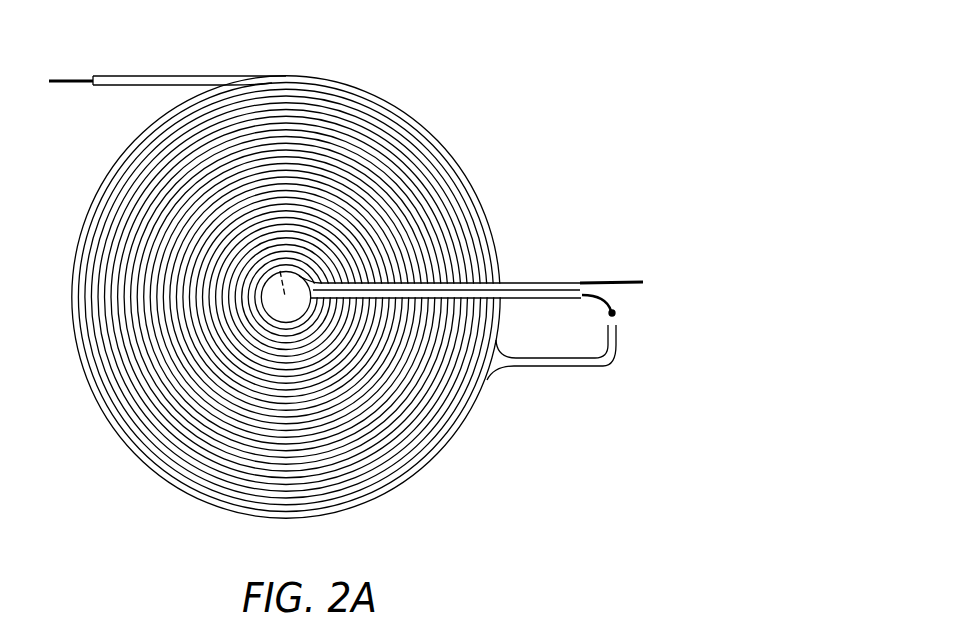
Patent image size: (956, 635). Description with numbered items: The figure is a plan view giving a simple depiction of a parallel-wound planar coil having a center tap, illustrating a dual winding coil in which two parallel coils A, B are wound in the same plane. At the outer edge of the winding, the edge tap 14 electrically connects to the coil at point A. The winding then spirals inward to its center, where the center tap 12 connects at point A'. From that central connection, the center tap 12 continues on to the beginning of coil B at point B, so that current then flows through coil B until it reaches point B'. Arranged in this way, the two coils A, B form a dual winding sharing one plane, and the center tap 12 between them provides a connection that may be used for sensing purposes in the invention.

The edge tap 14 is at (110, 76).
The coil A is at (189, 49).
The point A' is at (285, 297).
The point B' is at (440, 260).
The coil B is at (549, 377).
The center tap 12 is at (617, 320).